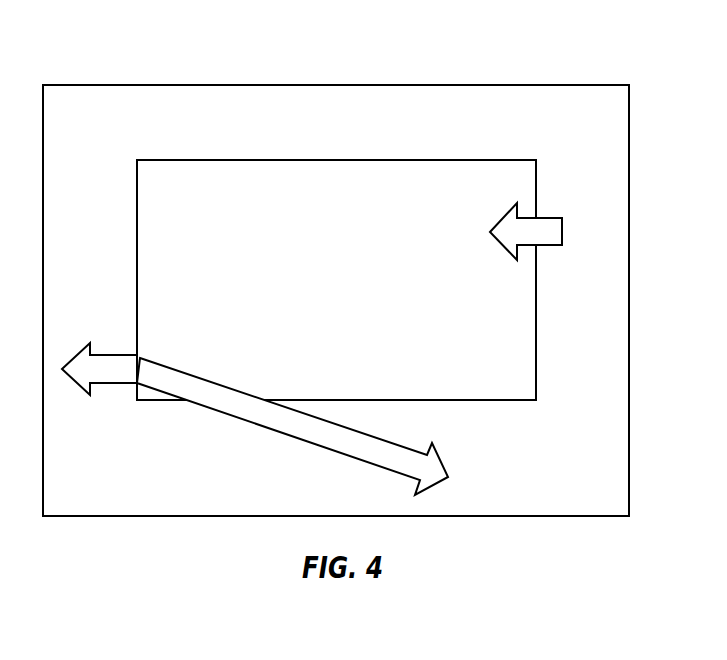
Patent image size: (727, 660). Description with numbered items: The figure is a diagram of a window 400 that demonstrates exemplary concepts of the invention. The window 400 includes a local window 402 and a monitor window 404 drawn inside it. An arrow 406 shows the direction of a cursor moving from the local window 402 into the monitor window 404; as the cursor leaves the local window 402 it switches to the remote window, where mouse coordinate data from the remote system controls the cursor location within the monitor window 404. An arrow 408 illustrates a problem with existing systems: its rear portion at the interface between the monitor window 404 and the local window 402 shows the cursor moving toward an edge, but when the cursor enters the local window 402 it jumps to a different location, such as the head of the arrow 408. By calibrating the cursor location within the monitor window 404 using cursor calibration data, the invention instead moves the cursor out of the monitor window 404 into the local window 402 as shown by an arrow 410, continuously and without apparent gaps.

The window 400 is at (474, 49).
The local window 402 is at (531, 85).
The monitor window 404 is at (476, 160).
The arrow 406 is at (548, 218).
The arrow 408 is at (247, 425).
The arrow 410 is at (115, 385).